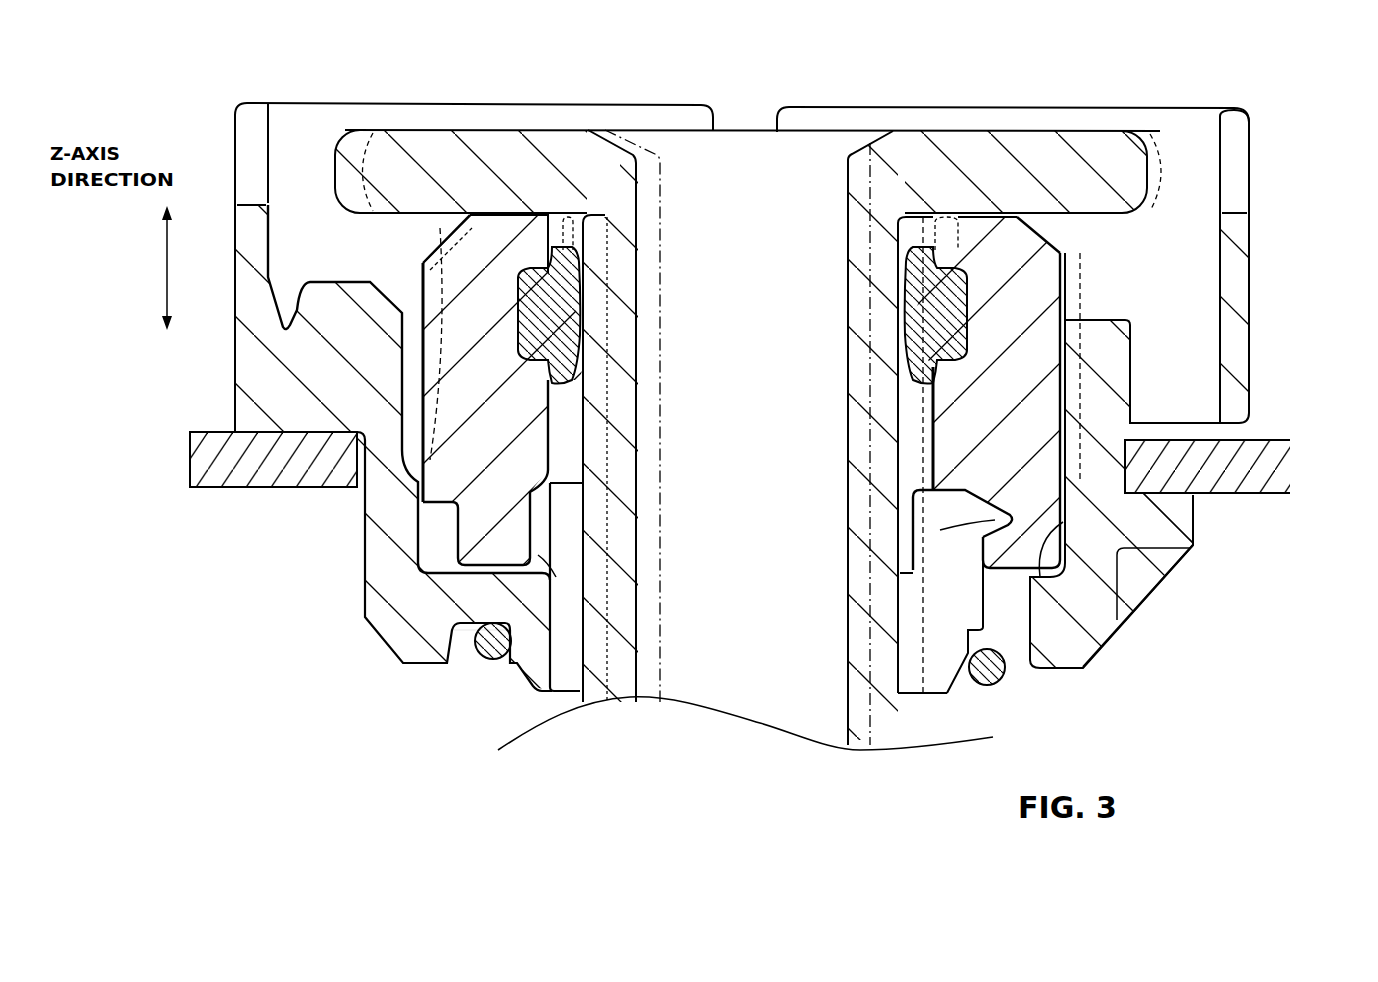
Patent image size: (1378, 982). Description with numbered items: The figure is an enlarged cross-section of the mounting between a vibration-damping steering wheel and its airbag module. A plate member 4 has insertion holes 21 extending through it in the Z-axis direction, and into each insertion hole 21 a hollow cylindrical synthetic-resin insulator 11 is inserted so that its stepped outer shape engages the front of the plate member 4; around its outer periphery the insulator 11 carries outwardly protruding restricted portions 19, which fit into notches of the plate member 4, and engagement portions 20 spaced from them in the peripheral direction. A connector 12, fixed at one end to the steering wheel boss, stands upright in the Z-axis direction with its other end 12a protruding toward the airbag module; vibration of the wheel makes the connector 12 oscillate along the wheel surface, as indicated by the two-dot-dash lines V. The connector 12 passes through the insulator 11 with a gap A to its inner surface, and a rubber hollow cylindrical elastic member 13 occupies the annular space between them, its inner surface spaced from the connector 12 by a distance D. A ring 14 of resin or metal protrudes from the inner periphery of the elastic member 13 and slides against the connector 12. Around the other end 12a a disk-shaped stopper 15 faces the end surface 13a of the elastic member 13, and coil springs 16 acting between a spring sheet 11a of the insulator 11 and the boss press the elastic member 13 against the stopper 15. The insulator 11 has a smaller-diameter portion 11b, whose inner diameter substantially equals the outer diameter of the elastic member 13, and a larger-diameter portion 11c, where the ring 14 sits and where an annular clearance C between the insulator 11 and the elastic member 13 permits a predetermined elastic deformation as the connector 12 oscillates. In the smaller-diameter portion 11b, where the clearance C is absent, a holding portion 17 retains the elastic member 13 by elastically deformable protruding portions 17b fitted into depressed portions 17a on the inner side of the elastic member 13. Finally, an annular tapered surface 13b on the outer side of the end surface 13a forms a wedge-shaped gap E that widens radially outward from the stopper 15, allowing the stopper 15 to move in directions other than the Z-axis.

The plate member 4 is at (222, 468).
The insulator 11 is at (1250, 256).
The spring sheet 11a is at (457, 663).
The smaller-diameter portion 11b is at (1004, 546).
The larger-diameter portion 11c is at (1074, 340).
The connector 12 is at (574, 647).
The other end of connector 12a is at (848, 128).
The elastic member 13 is at (1064, 290).
The end surface 13a is at (980, 213).
The annular tapered surface 13b is at (433, 243).
The ring 14 is at (582, 312).
The stopper 15 is at (1045, 140).
The coil spring 16 is at (479, 660).
The holding portion 17 is at (1040, 577).
The depressed portion 17a is at (1005, 518).
The protruding portion 17b is at (995, 521).
The restricted portion 19 is at (1140, 573).
The engagement portion 20 is at (1193, 523).
The insertion hole 21 is at (355, 497).
The gap A is at (563, 680).
The clearance C is at (413, 370).
The distance D is at (568, 235).
The wedge-shaped gap E is at (440, 228).
The two-dot-dash lines V is at (666, 666).